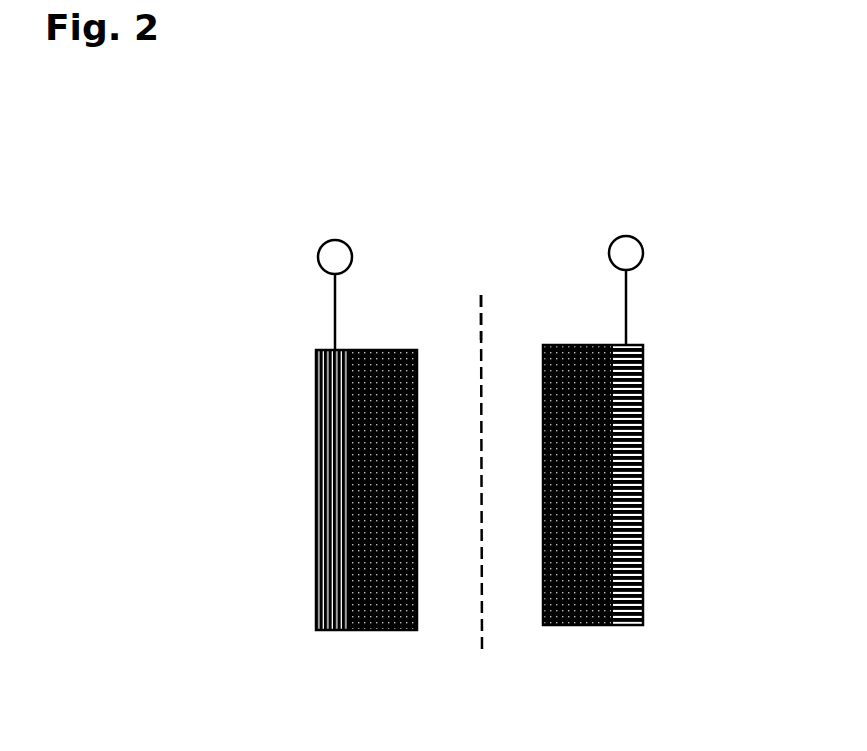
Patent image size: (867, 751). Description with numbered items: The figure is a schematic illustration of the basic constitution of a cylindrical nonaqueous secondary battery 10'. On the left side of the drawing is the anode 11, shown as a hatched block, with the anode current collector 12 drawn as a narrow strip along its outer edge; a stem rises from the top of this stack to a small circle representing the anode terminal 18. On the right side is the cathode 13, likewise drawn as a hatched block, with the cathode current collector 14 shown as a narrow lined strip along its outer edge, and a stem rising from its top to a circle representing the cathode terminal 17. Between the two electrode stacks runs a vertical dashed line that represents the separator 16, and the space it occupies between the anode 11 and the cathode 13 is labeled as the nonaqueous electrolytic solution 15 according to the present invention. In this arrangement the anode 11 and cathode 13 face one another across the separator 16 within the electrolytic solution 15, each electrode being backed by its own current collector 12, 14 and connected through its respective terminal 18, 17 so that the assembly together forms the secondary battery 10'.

The cylindrical nonaqueous secondary battery 10' is at (509, 176).
The anode 11 is at (383, 633).
The anode current collector 12 is at (320, 598).
The cathode 13 is at (573, 633).
The cathode current collector 14 is at (630, 633).
The nonaqueous electrolytic solution 15 is at (522, 494).
The separator 16 is at (483, 320).
The cathode terminal 17 is at (643, 247).
The anode terminal 18 is at (353, 252).